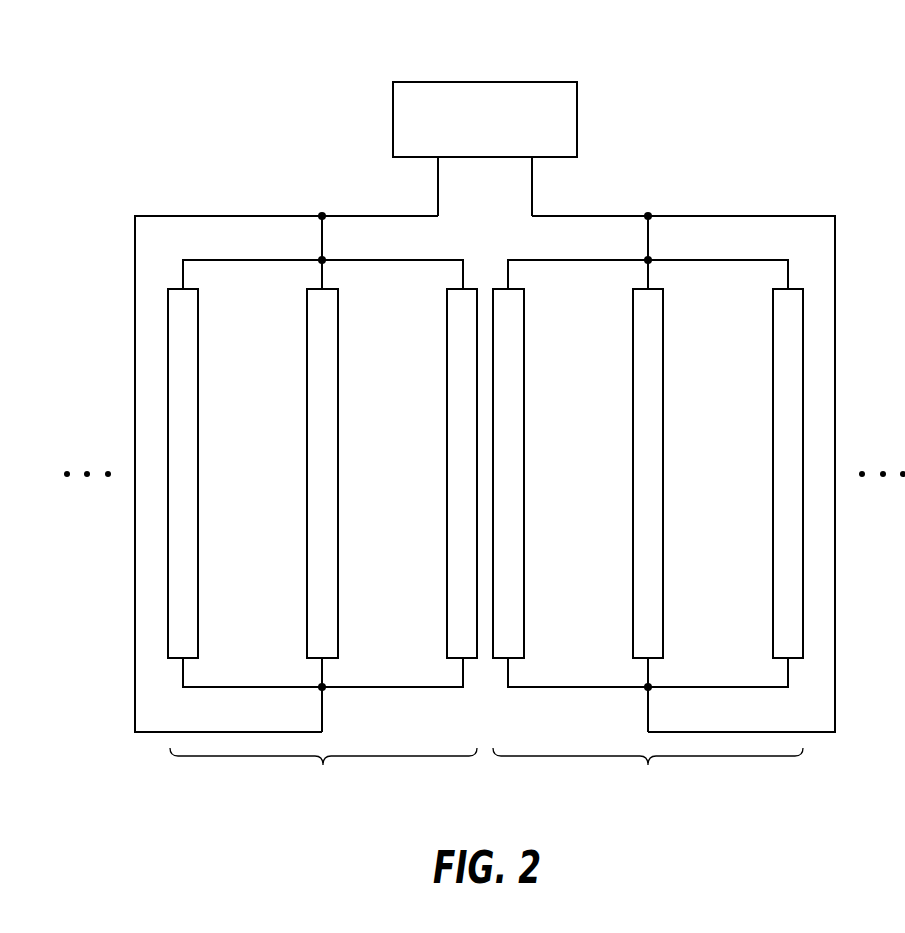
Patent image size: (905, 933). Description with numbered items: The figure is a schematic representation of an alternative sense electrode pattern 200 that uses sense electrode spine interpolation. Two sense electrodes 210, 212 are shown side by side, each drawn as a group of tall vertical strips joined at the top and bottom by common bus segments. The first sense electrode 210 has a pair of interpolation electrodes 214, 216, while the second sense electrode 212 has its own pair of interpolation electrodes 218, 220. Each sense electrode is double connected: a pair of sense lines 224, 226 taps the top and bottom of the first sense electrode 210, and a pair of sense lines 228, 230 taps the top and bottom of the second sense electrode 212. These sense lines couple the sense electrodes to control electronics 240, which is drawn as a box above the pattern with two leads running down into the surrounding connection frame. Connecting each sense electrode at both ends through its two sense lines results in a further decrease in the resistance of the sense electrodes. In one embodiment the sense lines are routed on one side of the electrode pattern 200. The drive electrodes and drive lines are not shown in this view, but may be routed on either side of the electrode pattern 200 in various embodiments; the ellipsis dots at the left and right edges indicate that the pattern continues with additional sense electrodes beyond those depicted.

The sense electrode pattern 200 is at (750, 56).
The control electronics 240 is at (487, 81).
The sense electrode 210 is at (323, 774).
The sense electrode 212 is at (648, 774).
The interpolation electrode 214 is at (199, 372).
The interpolation electrode 216 is at (446, 372).
The interpolation electrode 218 is at (525, 372).
The interpolation electrode 220 is at (772, 372).
The sense line 224 is at (323, 714).
The sense line 226 is at (323, 243).
The sense line 228 is at (649, 714).
The sense line 230 is at (649, 243).